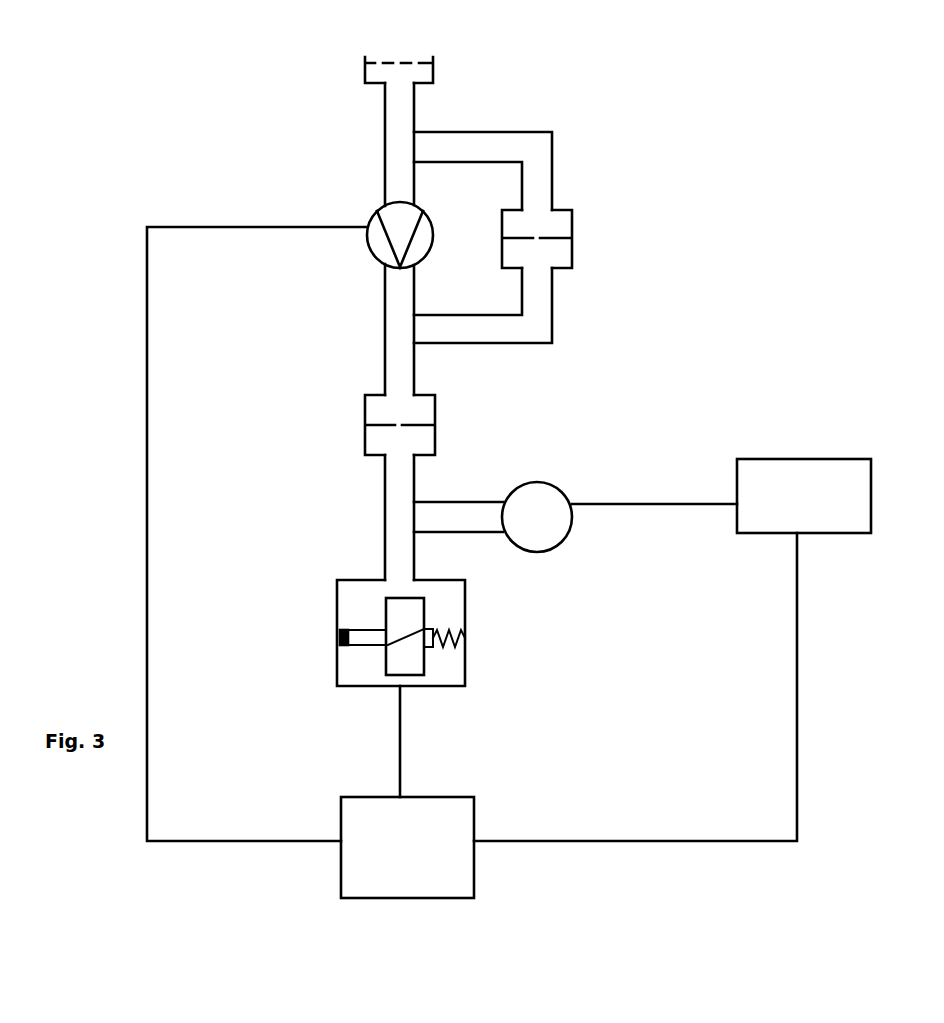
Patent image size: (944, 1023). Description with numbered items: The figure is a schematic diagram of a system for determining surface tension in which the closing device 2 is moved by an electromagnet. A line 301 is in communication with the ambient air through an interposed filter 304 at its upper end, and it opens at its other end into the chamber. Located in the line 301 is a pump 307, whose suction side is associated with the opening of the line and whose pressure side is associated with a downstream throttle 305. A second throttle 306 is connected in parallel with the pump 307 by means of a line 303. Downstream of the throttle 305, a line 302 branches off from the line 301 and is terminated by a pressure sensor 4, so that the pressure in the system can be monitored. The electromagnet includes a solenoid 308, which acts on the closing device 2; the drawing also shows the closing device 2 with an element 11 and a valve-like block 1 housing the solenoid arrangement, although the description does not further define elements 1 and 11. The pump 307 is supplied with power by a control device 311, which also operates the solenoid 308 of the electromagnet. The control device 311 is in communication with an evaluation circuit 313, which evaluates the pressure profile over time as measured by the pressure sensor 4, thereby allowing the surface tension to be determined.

The valve block 1 is at (465, 676).
The closing device 2 is at (357, 645).
The pressure sensor 4 is at (570, 532).
The actuator 11 is at (338, 639).
The line 301 is at (385, 153).
The line 302 is at (465, 500).
The line 303 is at (560, 317).
The filter 304 is at (407, 50).
The throttle 305 is at (434, 410).
The throttle 306 is at (520, 238).
The pump 307 is at (419, 224).
The solenoid 308 is at (415, 675).
The control device 311 is at (428, 907).
The evaluation circuit 313 is at (822, 450).